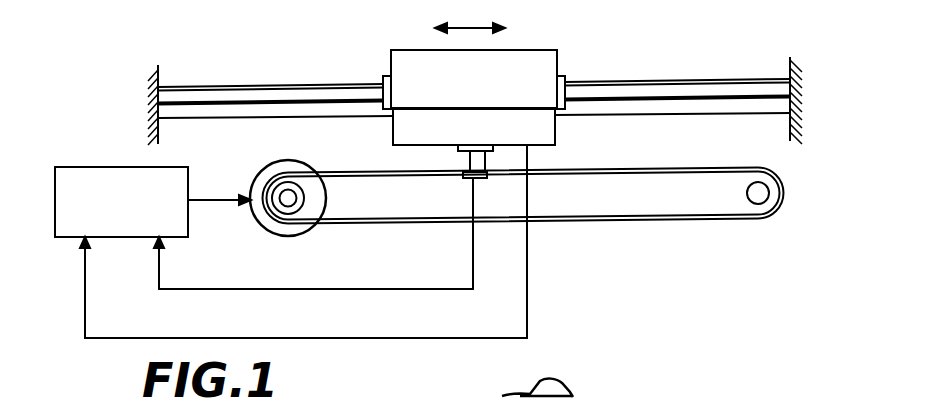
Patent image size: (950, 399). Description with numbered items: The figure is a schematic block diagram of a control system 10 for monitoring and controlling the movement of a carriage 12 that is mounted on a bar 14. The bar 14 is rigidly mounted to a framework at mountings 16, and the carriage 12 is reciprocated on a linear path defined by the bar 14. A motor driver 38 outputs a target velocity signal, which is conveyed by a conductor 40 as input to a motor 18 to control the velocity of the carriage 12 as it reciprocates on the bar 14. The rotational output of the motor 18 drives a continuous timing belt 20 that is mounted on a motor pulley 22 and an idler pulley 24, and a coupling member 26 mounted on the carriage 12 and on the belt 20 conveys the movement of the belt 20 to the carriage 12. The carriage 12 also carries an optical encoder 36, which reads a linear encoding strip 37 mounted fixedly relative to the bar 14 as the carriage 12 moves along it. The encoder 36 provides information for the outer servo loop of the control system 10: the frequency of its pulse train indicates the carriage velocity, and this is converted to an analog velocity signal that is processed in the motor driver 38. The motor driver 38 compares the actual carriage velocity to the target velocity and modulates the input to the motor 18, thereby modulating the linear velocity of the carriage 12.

The control system 10 is at (589, 282).
The carriage 12 is at (557, 50).
The bar 14 is at (705, 79).
The mountings 16 is at (159, 67).
The motor 18 is at (252, 183).
The continuous timing belt 20 is at (678, 223).
The motor pulley 22 is at (283, 190).
The idler pulley 24 is at (761, 200).
The coupling member 26 is at (463, 156).
The optical encoder 36 is at (558, 125).
The linear encoding strip 37 is at (676, 115).
The motor driver 38 is at (118, 167).
The conductor 40 is at (220, 203).